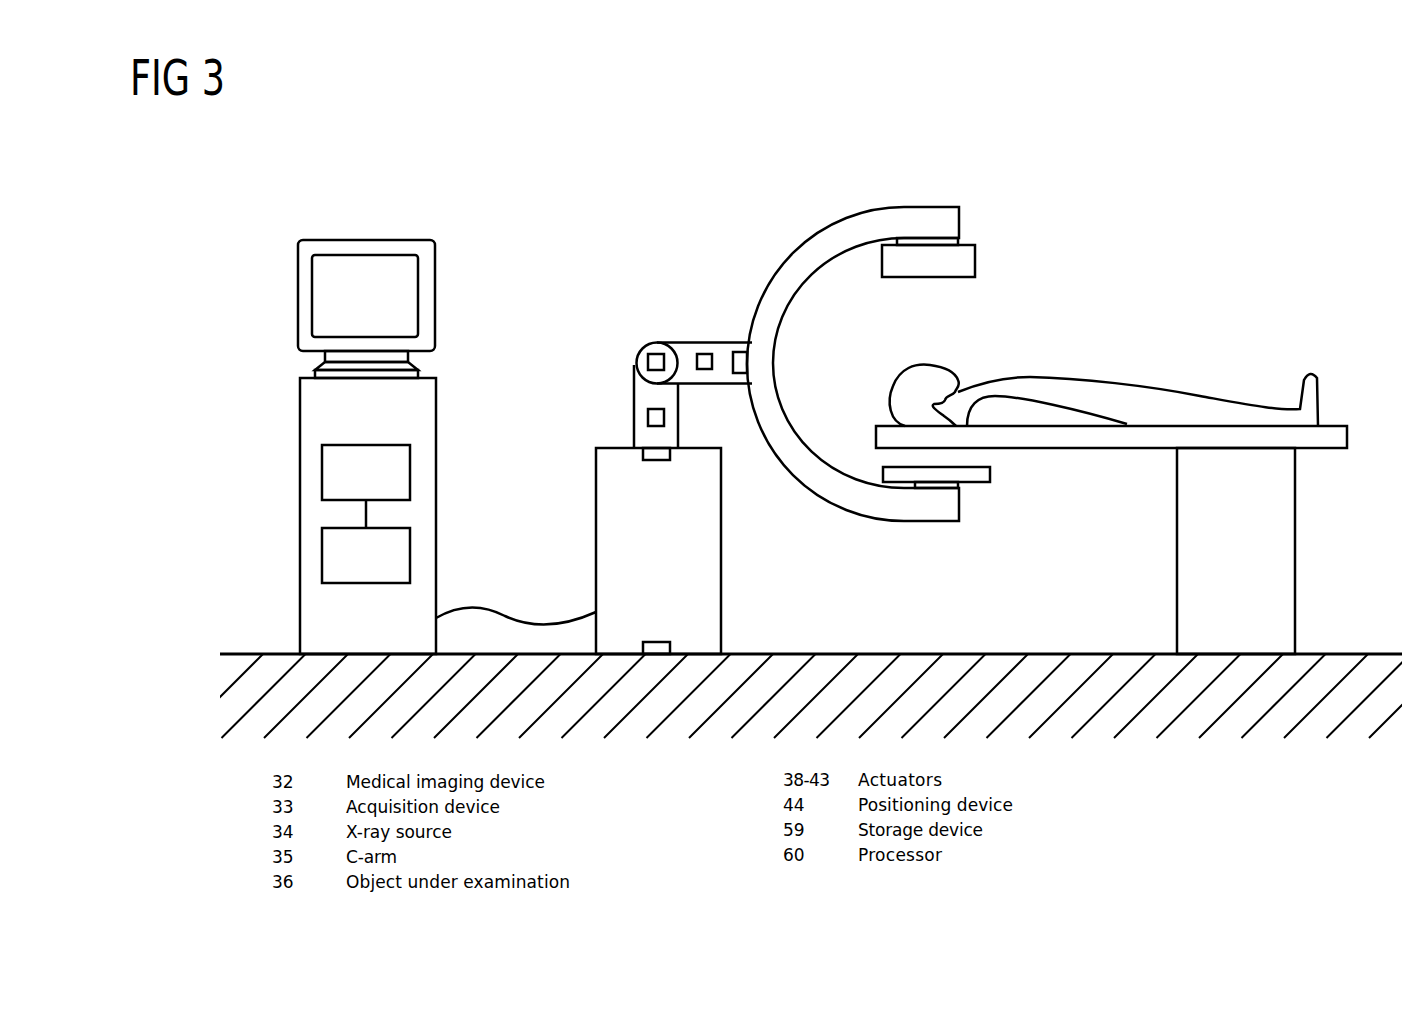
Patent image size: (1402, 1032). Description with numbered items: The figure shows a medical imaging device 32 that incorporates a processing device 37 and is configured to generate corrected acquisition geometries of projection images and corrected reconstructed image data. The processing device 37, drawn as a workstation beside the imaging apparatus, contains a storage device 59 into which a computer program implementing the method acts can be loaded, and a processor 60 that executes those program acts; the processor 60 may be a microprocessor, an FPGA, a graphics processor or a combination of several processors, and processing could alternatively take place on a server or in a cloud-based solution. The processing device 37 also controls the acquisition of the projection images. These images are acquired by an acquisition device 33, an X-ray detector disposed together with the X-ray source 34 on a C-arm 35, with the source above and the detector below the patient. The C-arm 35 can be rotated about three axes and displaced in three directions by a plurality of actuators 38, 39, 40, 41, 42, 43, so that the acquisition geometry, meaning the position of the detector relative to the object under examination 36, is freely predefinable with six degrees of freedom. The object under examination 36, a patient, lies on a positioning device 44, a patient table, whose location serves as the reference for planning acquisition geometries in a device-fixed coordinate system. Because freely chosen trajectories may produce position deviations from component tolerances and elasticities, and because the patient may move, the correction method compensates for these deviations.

The medical imaging device 32 is at (902, 329).
The acquisition device 33 is at (977, 484).
The X-ray source 34 is at (975, 262).
The C-arm 35 is at (872, 222).
The object under examination 36 is at (1246, 408).
The processing device 37 is at (294, 431).
The actuator 38 is at (740, 350).
The actuator 39 is at (703, 352).
The actuator 40 is at (648, 362).
The actuator 41 is at (648, 417).
The actuator 42 is at (643, 455).
The actuator 43 is at (670, 647).
The positioning device 44 is at (1320, 450).
The storage device 59 is at (322, 468).
The processor 60 is at (322, 551).